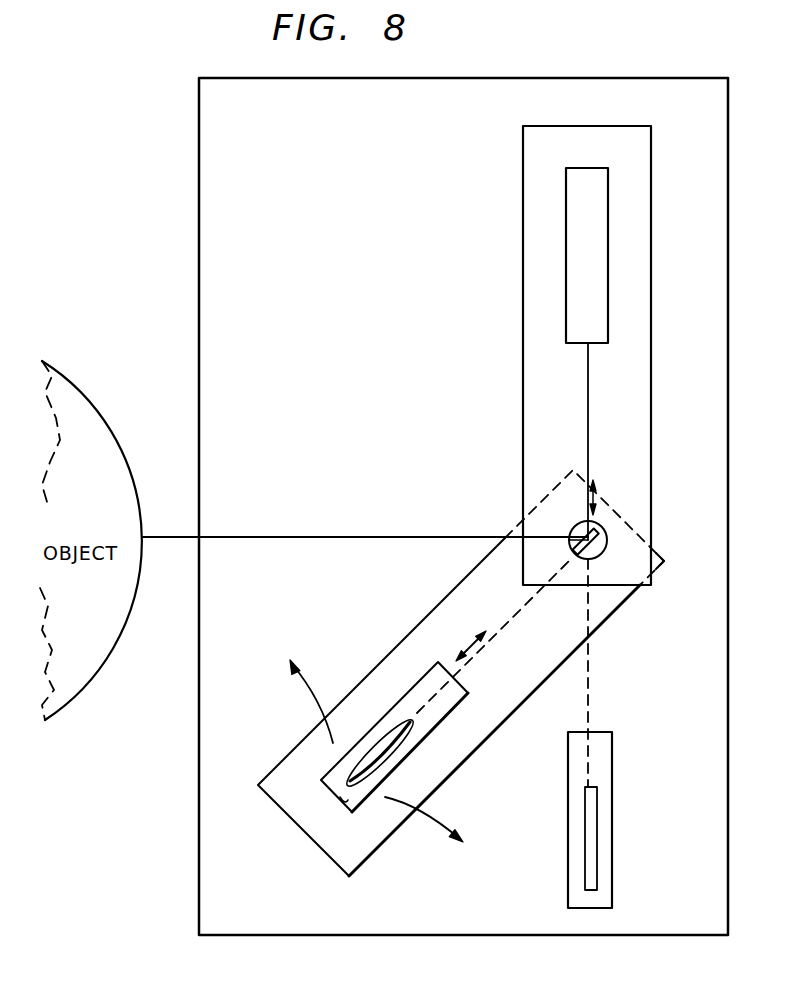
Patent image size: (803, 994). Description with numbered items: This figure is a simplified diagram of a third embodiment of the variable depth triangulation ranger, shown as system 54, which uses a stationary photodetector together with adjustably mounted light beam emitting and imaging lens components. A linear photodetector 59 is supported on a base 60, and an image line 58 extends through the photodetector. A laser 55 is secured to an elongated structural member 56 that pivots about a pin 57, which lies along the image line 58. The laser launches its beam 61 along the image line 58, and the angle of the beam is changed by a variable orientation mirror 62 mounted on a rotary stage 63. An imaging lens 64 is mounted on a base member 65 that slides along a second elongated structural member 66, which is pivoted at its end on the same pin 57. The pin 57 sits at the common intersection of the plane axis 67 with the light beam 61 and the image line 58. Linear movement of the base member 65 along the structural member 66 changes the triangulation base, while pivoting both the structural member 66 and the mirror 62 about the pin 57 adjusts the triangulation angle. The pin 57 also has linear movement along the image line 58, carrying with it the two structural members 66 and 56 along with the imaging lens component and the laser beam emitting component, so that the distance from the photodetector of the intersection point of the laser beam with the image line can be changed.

The system 54 is at (173, 284).
The laser 55 is at (608, 233).
The elongated structural member 56 is at (651, 331).
The pin 57 is at (603, 553).
The image line 58 is at (590, 672).
The linear photodetector 59 is at (597, 817).
The base 60 is at (568, 855).
The beam 61 is at (588, 392).
The variable orientation mirror 62 is at (575, 549).
The rotary stage 63 is at (600, 523).
The imaging lens 64 is at (340, 799).
The base member 65 is at (430, 732).
The elongated structural member 66 is at (467, 576).
The plane axis 67 is at (488, 637).